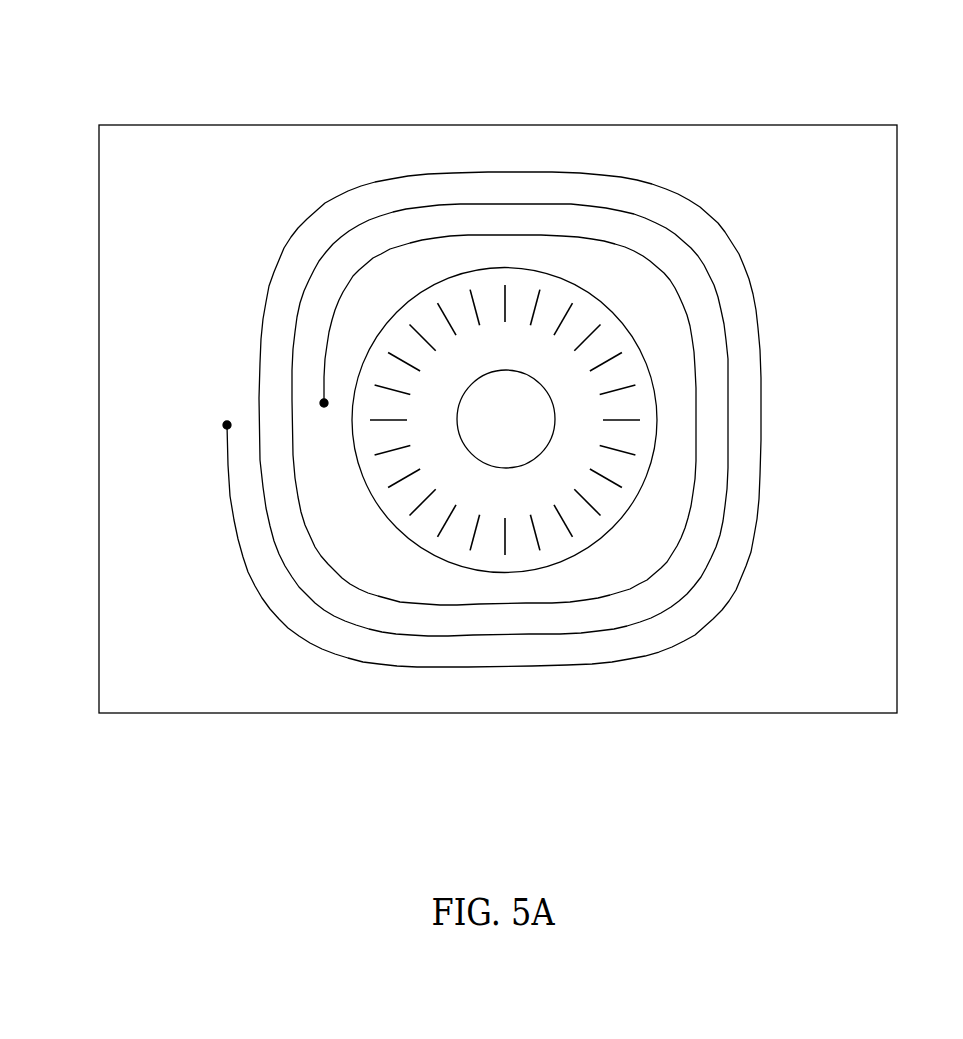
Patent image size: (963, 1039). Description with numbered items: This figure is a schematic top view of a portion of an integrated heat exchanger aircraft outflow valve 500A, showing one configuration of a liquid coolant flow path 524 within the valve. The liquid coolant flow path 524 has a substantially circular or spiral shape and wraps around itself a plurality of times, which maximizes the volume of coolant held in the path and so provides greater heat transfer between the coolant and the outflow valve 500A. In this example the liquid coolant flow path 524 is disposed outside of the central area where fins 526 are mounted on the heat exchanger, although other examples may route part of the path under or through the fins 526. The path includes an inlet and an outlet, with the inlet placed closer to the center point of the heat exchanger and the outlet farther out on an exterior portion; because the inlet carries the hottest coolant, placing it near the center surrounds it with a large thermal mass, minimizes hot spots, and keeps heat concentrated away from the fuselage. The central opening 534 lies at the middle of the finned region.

The outflow valve 500A is at (165, 48).
The liquid coolant flow path 524 is at (588, 172).
The fins 526 is at (508, 543).
The central opening 534 is at (510, 370).